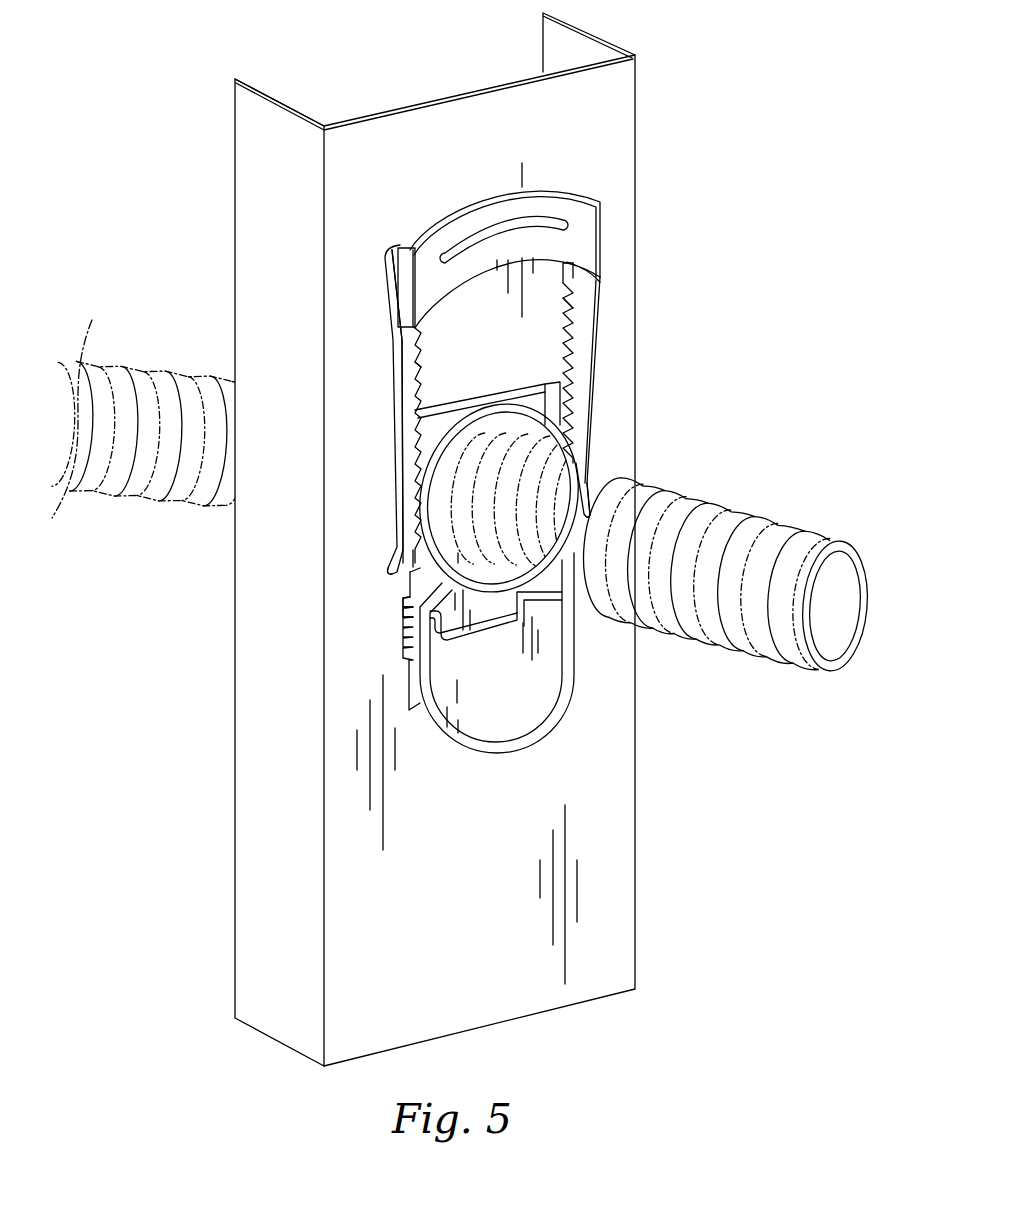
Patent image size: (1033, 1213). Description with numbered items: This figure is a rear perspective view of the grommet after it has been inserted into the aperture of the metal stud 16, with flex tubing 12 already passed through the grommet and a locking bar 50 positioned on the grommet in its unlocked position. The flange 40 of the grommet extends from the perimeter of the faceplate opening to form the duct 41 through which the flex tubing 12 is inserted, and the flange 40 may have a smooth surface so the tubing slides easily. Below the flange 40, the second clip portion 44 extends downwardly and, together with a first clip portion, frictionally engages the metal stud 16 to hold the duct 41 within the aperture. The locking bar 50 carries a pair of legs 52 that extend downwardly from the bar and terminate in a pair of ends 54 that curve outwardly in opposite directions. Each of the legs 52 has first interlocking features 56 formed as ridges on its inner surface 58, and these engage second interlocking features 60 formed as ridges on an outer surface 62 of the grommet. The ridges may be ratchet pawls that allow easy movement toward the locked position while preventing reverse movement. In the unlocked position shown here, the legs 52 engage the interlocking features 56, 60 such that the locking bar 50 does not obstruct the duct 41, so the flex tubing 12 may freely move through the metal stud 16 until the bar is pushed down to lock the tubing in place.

The flex tubing 12 is at (723, 518).
The metal stud 16 is at (274, 122).
The flange 40 is at (428, 465).
The duct 41 is at (517, 437).
The second clip portion 44 is at (505, 700).
The locking bar 50 is at (596, 222).
The pair of legs 52 is at (400, 363).
The pair of ends 54 is at (398, 557).
The first interlocking features 56 is at (563, 305).
The inner surface 58 is at (562, 355).
The second interlocking features 60 is at (405, 628).
The outer surface 62 is at (410, 590).